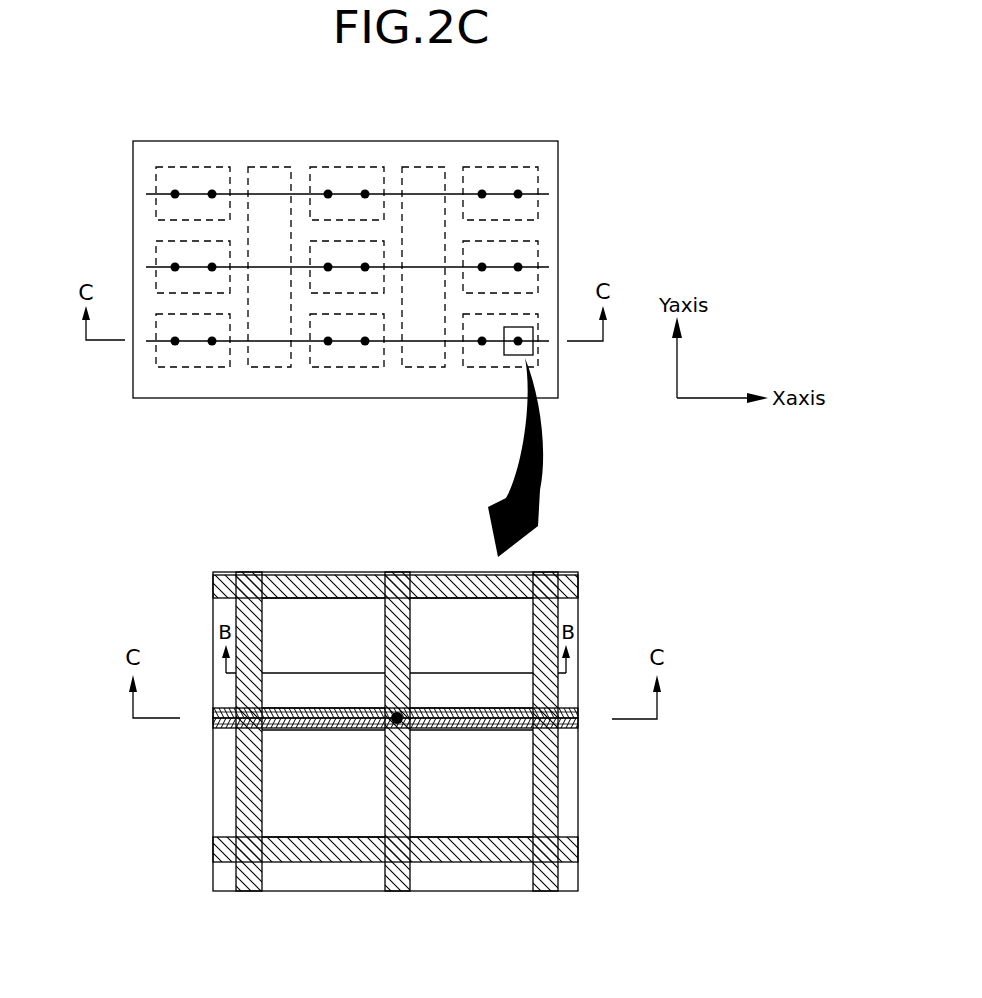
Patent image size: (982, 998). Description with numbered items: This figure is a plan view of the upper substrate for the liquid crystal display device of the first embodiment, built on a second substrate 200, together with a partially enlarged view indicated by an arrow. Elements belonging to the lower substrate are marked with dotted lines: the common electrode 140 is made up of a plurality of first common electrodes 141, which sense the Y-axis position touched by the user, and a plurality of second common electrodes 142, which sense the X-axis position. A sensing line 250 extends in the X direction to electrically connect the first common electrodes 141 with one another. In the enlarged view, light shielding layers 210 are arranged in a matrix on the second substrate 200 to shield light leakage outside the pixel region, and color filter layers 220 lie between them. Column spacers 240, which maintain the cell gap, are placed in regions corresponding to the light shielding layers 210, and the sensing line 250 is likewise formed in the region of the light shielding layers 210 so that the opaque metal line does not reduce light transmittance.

The common electrode 140 is at (198, 86).
The first common electrodes 141 is at (193, 167).
The second common electrodes 142 is at (270, 167).
The second substrate 200 is at (558, 165).
The light shielding layers 210 is at (250, 580).
The color filter layers 220 is at (323, 625).
The column spacers 240 is at (365, 191).
The sensing line 250 is at (547, 728).